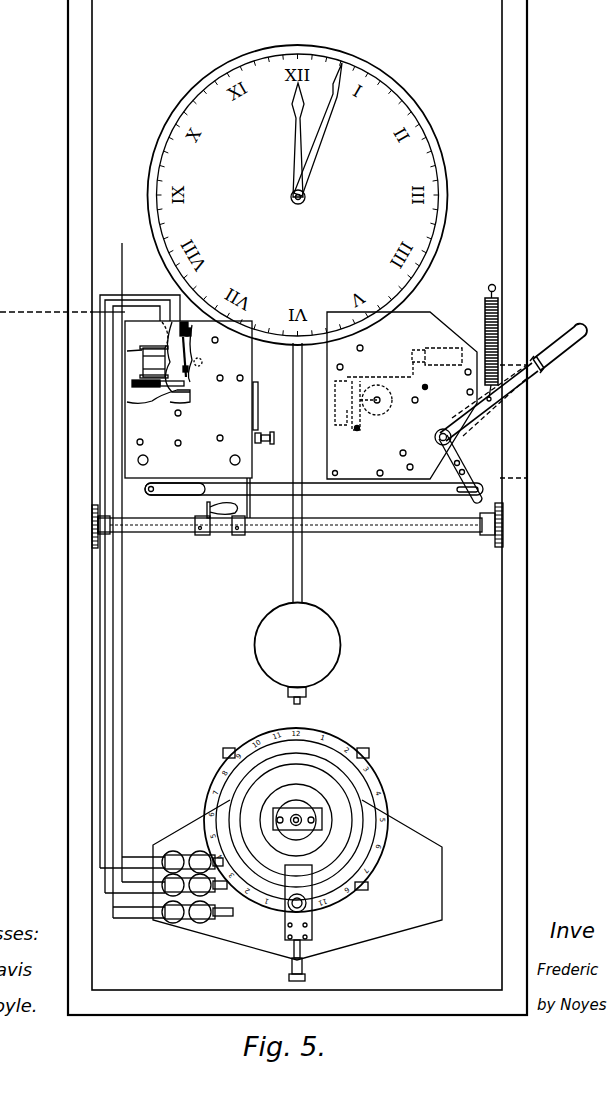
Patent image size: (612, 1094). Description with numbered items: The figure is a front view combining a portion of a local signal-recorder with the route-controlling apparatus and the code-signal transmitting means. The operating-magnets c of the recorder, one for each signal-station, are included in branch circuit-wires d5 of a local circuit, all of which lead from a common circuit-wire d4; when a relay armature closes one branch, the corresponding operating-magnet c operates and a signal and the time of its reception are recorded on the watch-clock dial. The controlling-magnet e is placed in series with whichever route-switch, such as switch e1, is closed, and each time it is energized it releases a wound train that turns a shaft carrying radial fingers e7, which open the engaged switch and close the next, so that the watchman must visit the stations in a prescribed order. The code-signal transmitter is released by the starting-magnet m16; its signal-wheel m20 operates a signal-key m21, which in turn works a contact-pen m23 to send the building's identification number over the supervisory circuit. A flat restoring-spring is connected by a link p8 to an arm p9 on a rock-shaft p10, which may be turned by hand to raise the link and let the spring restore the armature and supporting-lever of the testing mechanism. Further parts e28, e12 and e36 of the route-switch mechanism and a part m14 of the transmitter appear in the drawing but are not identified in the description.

The controlling-magnet e is at (147, 352).
The route-switch e1 is at (189, 343).
The fingers e7 is at (200, 361).
The contact e36 is at (189, 368).
The contact bar e28 is at (132, 384).
The slotted arm e12 is at (158, 483).
The starting-magnet m16 is at (428, 349).
The contact-pen m23 is at (368, 371).
The lever m14 is at (347, 386).
The signal-wheel m20 is at (384, 410).
The signal-key m21 is at (362, 428).
The rock-shaft p10 is at (165, 532).
The arm p9 is at (237, 535).
The link p8 is at (259, 522).
The circuit-wire d4 is at (122, 742).
The branch circuit-wires d5 is at (113, 763).
The operating-magnets c is at (174, 853).